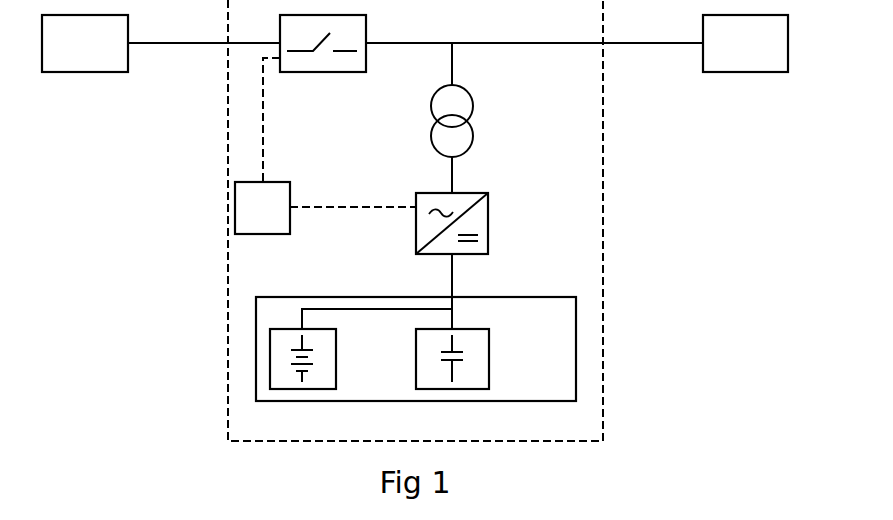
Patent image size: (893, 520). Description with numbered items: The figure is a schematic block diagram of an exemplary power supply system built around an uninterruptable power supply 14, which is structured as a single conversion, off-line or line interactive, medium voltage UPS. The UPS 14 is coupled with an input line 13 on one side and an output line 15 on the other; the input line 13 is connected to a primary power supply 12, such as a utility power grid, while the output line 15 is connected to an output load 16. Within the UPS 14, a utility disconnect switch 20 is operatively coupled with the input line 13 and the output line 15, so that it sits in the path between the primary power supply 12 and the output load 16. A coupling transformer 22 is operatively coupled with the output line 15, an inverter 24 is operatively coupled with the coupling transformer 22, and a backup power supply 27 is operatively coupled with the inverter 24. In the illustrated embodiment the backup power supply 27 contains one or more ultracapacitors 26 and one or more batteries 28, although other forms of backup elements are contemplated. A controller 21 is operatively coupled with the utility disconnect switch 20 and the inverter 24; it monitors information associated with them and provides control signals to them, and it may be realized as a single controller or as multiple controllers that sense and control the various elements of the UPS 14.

The primary power supply 12 is at (78, 73).
The input line 13 is at (174, 44).
The uninterruptable power supply 14 is at (228, 233).
The output line 15 is at (650, 44).
The output load 16 is at (745, 73).
The utility disconnect switch 20 is at (366, 18).
The controller 21 is at (262, 234).
The coupling transformer 22 is at (437, 121).
The inverter 24 is at (416, 232).
The ultracapacitors 26 is at (489, 343).
The backup power supply 27 is at (518, 297).
The batteries 28 is at (336, 343).